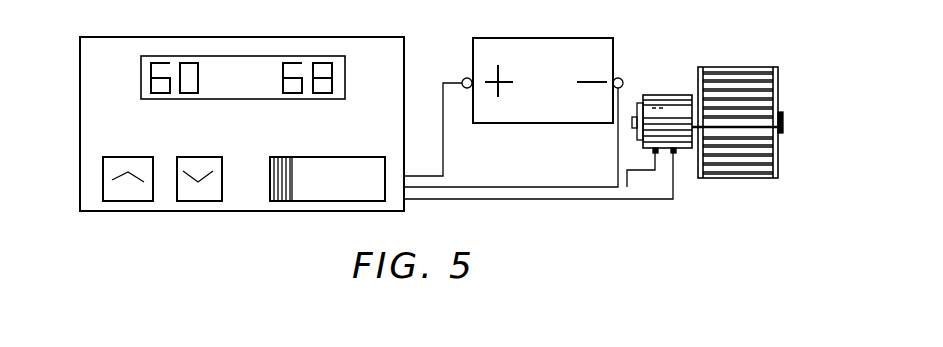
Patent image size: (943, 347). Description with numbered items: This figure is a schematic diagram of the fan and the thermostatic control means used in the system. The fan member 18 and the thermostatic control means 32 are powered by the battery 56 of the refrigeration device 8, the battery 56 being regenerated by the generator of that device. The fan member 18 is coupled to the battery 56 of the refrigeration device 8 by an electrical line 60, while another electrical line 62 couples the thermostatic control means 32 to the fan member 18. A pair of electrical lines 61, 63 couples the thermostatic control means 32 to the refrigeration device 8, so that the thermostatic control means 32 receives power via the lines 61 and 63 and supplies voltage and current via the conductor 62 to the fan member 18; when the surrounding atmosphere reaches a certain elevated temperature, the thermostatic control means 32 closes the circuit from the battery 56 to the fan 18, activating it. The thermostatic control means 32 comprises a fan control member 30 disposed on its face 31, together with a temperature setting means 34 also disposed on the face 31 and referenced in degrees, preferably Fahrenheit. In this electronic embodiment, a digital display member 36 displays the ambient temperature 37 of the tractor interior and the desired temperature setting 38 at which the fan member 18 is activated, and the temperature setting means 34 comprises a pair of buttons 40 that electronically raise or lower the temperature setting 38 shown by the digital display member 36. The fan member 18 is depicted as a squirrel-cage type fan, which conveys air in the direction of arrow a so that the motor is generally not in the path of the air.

The refrigeration device 8 is at (622, 55).
The fan member 18 is at (716, 130).
The fan control member 30 is at (392, 169).
The face 31 is at (87, 157).
The thermostatic control means 32 is at (336, 222).
The temperature setting means 34 is at (92, 194).
The digital display member 36 is at (228, 72).
The ambient temperature 37 is at (333, 63).
The temperature setting 38 is at (175, 78).
The buttons 40 is at (129, 192).
The battery 56 is at (548, 88).
The arrow a is at (570, 104).
The electrical line 60 is at (645, 172).
The electrical line 61 is at (618, 133).
The electrical line 62 is at (567, 200).
The electrical line 63 is at (443, 114).